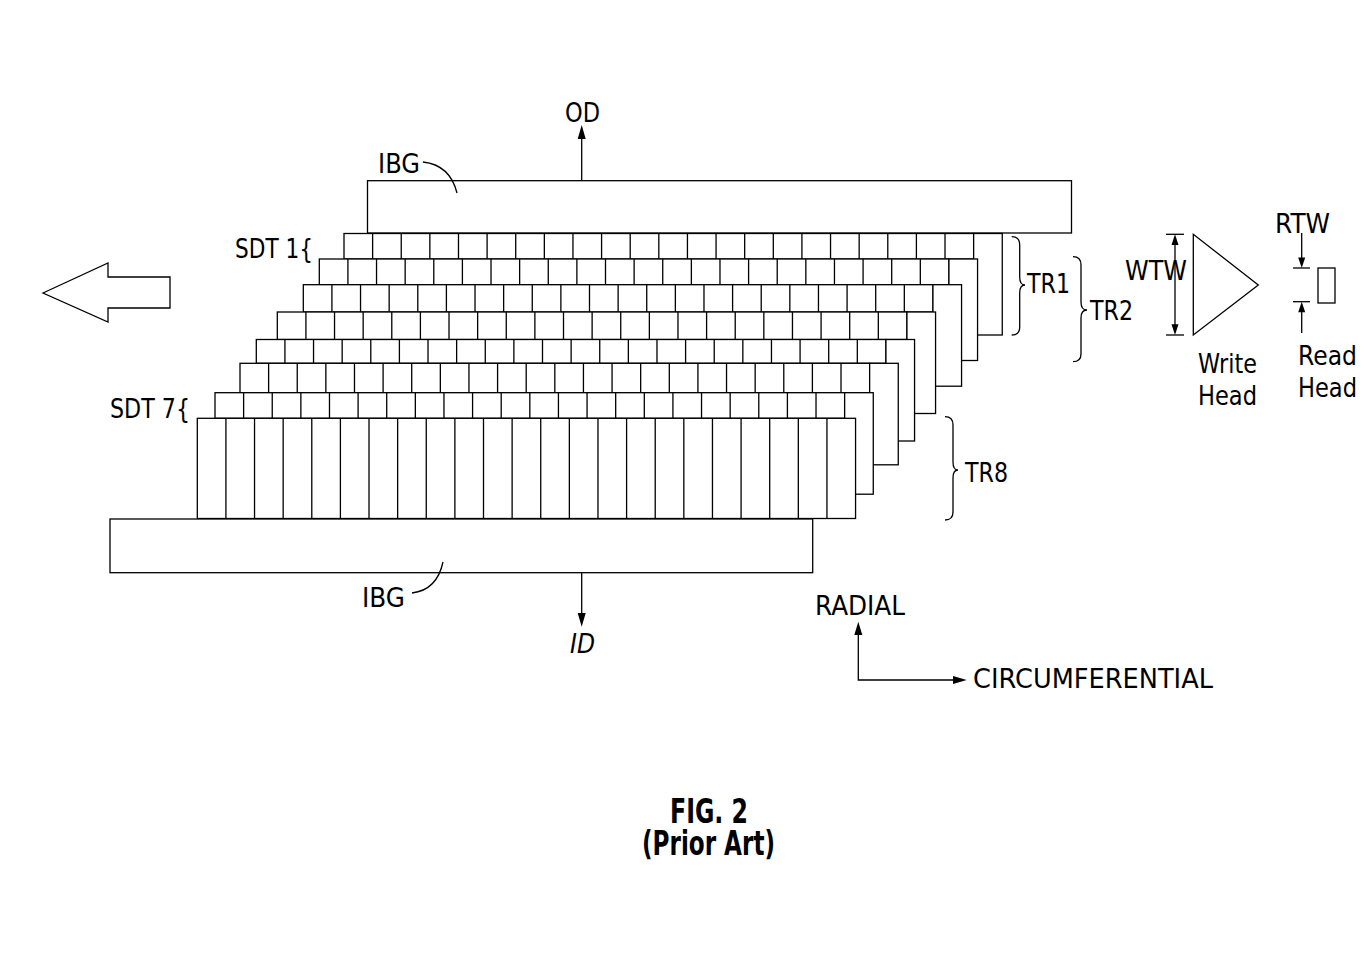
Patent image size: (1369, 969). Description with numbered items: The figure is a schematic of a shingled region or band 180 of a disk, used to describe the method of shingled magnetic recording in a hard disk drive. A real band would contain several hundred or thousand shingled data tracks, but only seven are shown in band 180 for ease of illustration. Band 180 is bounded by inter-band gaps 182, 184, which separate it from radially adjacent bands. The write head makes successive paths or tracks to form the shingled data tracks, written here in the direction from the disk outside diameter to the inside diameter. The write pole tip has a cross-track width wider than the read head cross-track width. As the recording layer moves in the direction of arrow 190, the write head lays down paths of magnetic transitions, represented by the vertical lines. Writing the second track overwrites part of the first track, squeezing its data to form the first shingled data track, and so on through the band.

The shingled region or band 180 is at (283, 68).
The inter-band gap 182 is at (653, 562).
The inter-band gap 184 is at (900, 193).
The arrow 190 is at (128, 277).